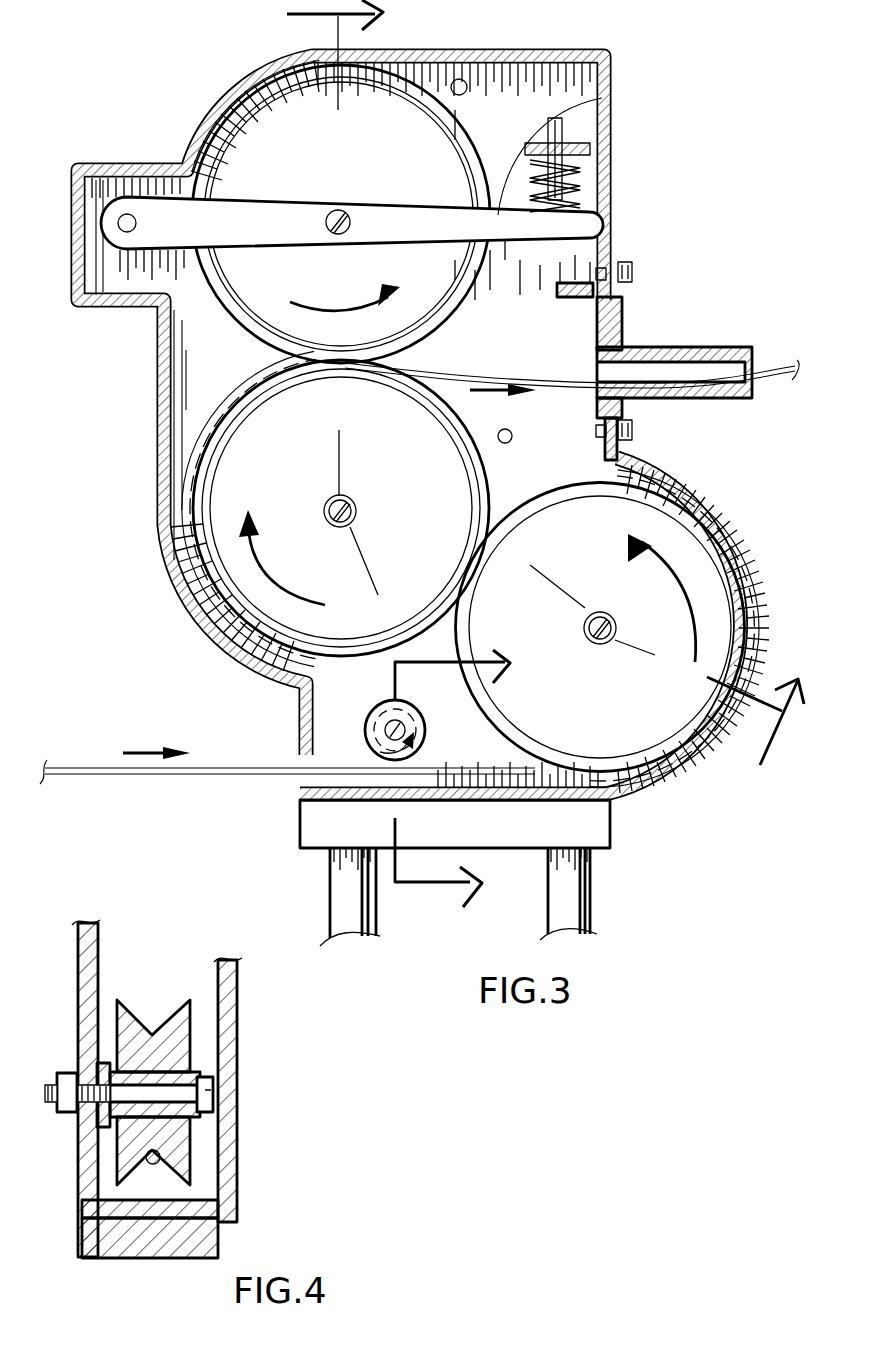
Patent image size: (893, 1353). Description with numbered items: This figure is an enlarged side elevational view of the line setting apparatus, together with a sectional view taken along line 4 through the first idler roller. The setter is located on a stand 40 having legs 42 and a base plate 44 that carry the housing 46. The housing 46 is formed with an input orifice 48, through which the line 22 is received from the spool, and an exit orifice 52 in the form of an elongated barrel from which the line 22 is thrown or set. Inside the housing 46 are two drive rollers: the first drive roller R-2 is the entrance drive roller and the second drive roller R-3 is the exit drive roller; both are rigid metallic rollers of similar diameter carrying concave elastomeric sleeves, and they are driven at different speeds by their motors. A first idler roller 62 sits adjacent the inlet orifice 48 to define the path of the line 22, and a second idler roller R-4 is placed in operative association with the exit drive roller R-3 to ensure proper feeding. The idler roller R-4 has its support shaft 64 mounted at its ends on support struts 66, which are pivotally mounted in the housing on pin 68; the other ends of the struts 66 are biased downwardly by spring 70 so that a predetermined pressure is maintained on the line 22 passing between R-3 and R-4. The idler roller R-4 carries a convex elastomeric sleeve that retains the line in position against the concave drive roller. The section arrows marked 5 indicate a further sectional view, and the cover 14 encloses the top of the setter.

In FIG. 3, the housing 14 is at (518, 52).
In FIG. 3, the line 22 is at (775, 362).
In FIG. 4, the line 22 is at (150, 1165).
In FIG. 3, the stand 40 is at (612, 858).
In FIG. 3, the legs 42 is at (590, 910).
In FIG. 3, the base plate 44 is at (612, 828).
In FIG. 3, the housing 46 is at (160, 435).
In FIG. 3, the input orifice 48 is at (298, 782).
In FIG. 3, the exit orifice 52 is at (755, 388).
In FIG. 3, the first idler roller 62 is at (335, 730).
In FIG. 4, the first idler roller 62 is at (192, 1035).
In FIG. 3, the support shaft 64 is at (332, 212).
In FIG. 3, the support struts 66 is at (602, 98).
In FIG. 3, the pin 68 is at (100, 232).
In FIG. 3, the spring 70 is at (585, 180).
In FIG. 3, the first drive roller R-2 is at (700, 522).
In FIG. 3, the second drive roller R-3 is at (192, 545).
In FIG. 3, the second idler roller R-4 is at (236, 162).
In FIG. 3, the section line 4- 4 is at (471, 781).
In FIG. 3, the section line 5- 5 is at (531, 406).